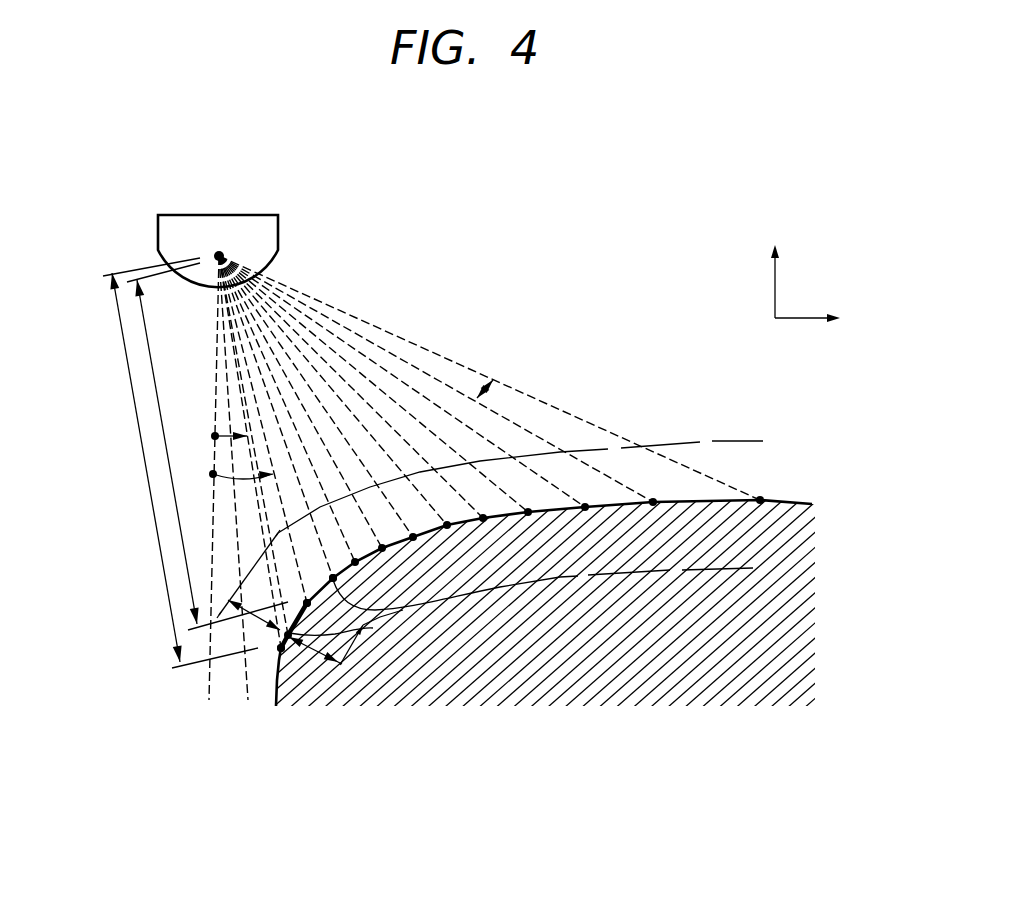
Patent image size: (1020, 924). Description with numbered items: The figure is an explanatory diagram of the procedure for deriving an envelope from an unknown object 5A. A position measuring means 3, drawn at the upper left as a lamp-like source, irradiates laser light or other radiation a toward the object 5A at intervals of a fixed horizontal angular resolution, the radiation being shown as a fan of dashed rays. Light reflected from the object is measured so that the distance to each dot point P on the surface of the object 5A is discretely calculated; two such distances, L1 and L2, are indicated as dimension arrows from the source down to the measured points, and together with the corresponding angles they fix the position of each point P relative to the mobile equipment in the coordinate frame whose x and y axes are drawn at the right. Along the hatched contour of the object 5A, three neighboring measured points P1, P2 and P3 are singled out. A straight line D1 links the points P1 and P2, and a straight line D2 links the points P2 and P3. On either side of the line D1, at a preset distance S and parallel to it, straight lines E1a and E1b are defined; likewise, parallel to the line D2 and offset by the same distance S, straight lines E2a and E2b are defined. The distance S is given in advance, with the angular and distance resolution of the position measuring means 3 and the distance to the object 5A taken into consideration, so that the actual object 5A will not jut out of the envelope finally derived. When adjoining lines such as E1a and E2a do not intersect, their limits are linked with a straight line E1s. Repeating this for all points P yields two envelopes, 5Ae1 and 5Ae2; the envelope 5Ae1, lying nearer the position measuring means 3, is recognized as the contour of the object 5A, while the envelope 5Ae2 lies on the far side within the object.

The position measuring means 3 is at (280, 233).
The radiation a is at (350, 315).
The x axis x is at (807, 301).
The y axis y is at (785, 275).
The object 5A is at (783, 502).
The dot point P is at (760, 502).
The envelope 5Ae1 is at (713, 440).
The envelope 5Ae2 is at (730, 567).
The distance L1 is at (175, 463).
The distance L2 is at (207, 446).
The straight line E1a is at (213, 612).
The straight line E1s is at (250, 560).
The straight line E2a is at (278, 533).
The straight line E1b is at (343, 660).
The straight line E2b is at (373, 628).
The straight line D1 is at (363, 626).
The straight line D2 is at (403, 610).
The point P1 is at (267, 659).
The point P2 is at (324, 615).
The point P3 is at (353, 585).
The distance S is at (283, 642).